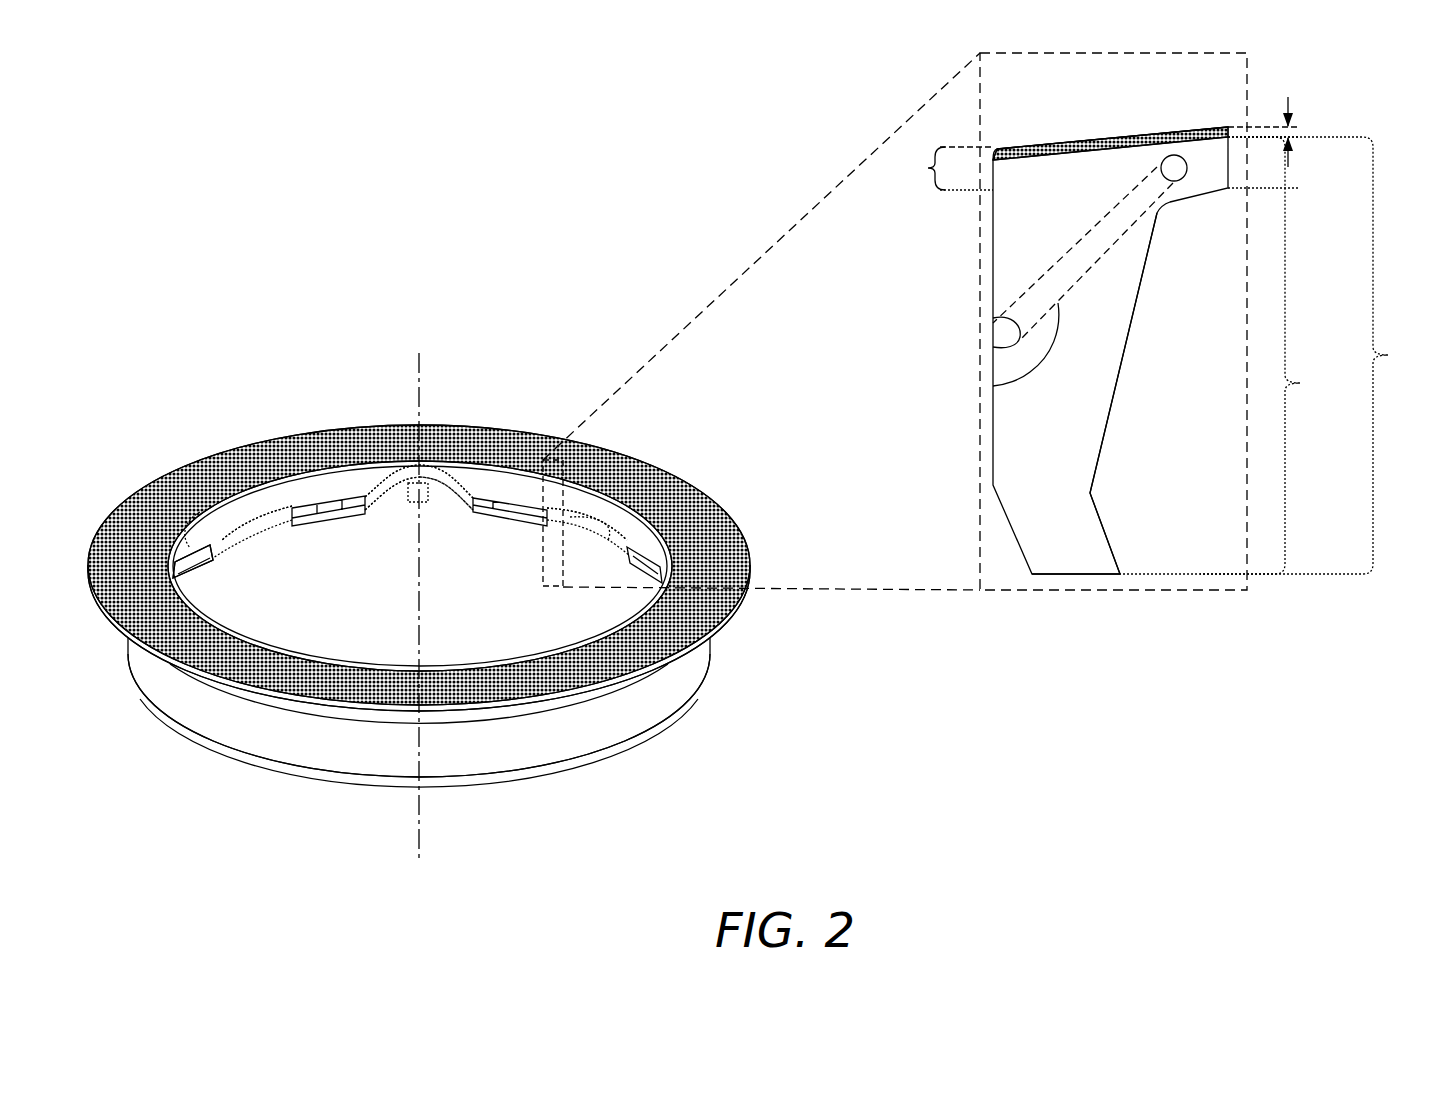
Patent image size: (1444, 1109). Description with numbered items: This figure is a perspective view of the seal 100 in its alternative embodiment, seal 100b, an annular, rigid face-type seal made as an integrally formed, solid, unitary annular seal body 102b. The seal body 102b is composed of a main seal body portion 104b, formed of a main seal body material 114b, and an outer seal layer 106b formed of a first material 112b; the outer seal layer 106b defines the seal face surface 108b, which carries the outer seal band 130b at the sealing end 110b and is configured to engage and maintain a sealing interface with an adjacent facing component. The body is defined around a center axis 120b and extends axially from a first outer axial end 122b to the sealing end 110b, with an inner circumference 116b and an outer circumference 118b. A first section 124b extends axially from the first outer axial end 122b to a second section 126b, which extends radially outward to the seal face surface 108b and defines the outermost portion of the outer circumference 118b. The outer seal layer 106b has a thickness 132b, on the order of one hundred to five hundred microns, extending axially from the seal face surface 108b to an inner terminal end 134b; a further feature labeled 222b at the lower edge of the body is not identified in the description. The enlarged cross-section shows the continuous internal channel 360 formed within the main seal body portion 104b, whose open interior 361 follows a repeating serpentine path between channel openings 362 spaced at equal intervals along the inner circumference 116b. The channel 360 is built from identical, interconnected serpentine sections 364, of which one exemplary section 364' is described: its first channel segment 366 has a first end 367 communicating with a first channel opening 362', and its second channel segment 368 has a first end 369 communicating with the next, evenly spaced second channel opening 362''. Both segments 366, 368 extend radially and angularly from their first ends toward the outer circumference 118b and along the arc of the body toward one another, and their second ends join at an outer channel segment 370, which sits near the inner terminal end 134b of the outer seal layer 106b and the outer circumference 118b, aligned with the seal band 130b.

The seal 100 is at (232, 312).
The seal 100b is at (247, 381).
The annular seal body 102b is at (593, 722).
The main seal body portion 104b is at (1282, 355).
The outer seal layer 106b is at (188, 667).
The seal face surface 108b is at (222, 465).
The sealing end 110b is at (157, 502).
The first material 112b is at (1070, 140).
The main seal body material 114b is at (1070, 433).
The inner circumference 116b is at (510, 487).
The outer circumference 118b is at (740, 610).
The center axis 120b is at (420, 358).
The first outer axial end 122b is at (1068, 574).
The first section 124b is at (1281, 355).
The second section 126b is at (938, 168).
The outer seal band 130b is at (1195, 127).
The thickness 132b is at (1293, 130).
The inner terminal end 134b is at (985, 155).
The bottom surface 222b is at (510, 782).
The internal channel 360 is at (597, 496).
The open interior 361 is at (327, 503).
The channel openings 362 is at (491, 565).
The first channel opening 362' is at (651, 409).
The second channel opening 362'' is at (257, 570).
The serpentine sections 364 is at (424, 512).
The exemplary section 364' is at (768, 335).
The first channel segment 366 is at (393, 500).
The first end 367 is at (372, 515).
The second channel segment 368 is at (415, 505).
The first end 369 is at (458, 503).
The outer channel segment 370 is at (412, 503).